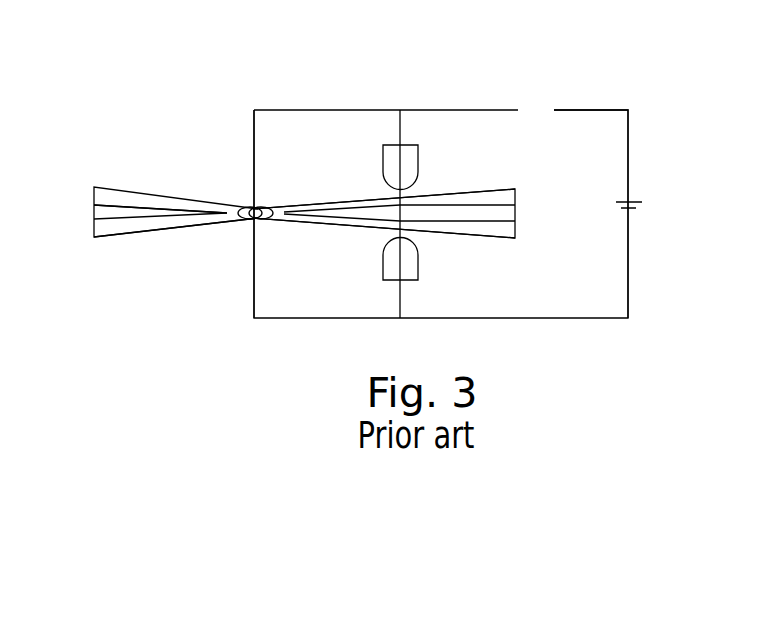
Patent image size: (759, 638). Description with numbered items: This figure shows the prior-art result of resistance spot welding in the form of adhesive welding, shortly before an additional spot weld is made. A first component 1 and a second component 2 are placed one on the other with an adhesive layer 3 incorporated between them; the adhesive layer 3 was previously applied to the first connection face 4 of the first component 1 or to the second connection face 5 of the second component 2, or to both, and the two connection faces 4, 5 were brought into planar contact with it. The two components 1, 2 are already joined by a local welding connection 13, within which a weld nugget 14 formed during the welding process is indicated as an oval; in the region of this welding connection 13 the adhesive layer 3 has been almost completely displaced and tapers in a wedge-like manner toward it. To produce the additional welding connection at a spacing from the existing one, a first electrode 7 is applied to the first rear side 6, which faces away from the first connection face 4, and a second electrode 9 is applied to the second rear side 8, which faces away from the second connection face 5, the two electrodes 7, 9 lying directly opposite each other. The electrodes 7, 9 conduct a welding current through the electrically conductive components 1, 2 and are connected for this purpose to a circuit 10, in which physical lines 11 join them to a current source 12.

The first component 1 is at (108, 197).
The second component 2 is at (107, 230).
The adhesive layer 3 is at (482, 215).
The first connection face 4 is at (149, 224).
The second connection face 5 is at (131, 204).
The first rear side 6 is at (328, 192).
The first electrode 7 is at (408, 163).
The second rear side 8 is at (315, 232).
The second electrode 9 is at (410, 272).
The circuit 10 is at (488, 100).
The physical lines 11 is at (575, 205).
The current source 12 is at (662, 206).
The welding connection 13 is at (234, 178).
The weld nugget 14 is at (237, 213).